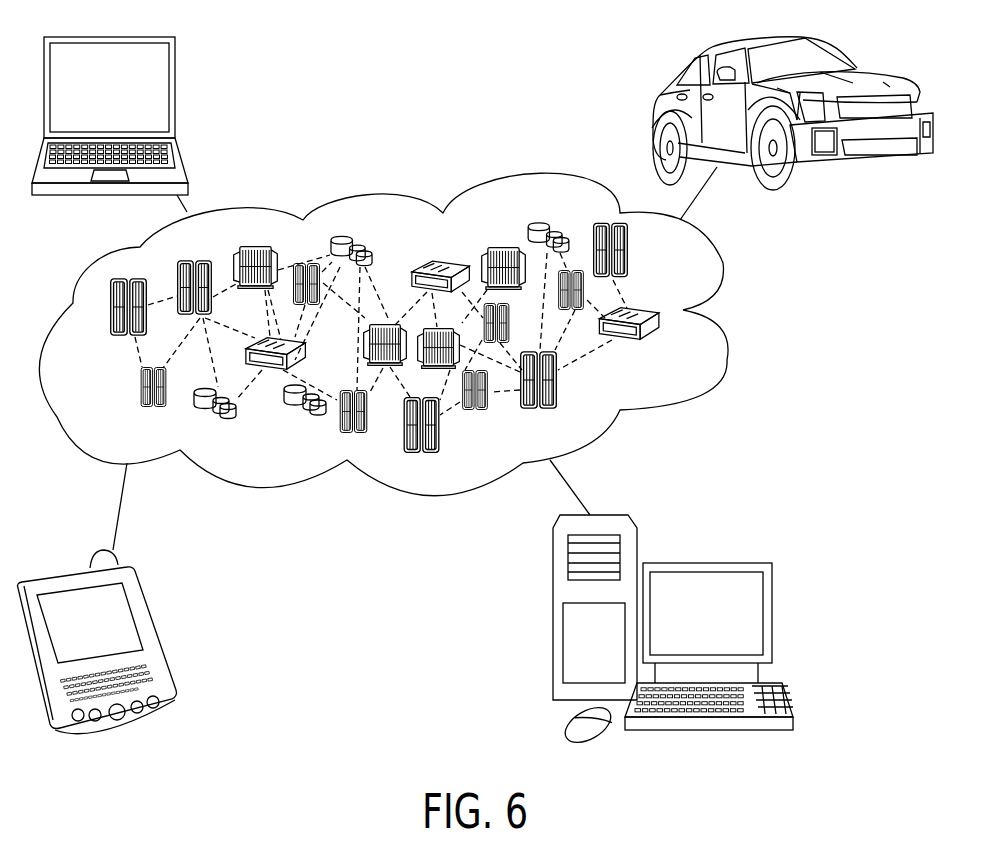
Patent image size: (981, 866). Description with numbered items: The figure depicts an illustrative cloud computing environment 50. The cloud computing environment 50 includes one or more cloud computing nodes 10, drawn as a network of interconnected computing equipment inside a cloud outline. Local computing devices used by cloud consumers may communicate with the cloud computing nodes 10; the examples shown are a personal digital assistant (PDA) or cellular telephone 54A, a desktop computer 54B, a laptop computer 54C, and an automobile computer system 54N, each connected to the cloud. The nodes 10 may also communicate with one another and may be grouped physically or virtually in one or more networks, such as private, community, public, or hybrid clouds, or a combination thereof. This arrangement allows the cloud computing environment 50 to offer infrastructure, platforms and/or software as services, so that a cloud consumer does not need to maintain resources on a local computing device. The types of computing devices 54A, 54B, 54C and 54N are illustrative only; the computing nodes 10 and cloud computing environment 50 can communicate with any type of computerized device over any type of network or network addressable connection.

The cloud computing nodes 10 is at (682, 369).
The cloud computing environment 50 is at (725, 262).
The personal digital assistant (PDA) or cellular telephone 54A is at (143, 612).
The desktop computer 54B is at (772, 612).
The laptop computer 54C is at (176, 92).
The automobile computer system 54N is at (837, 58).